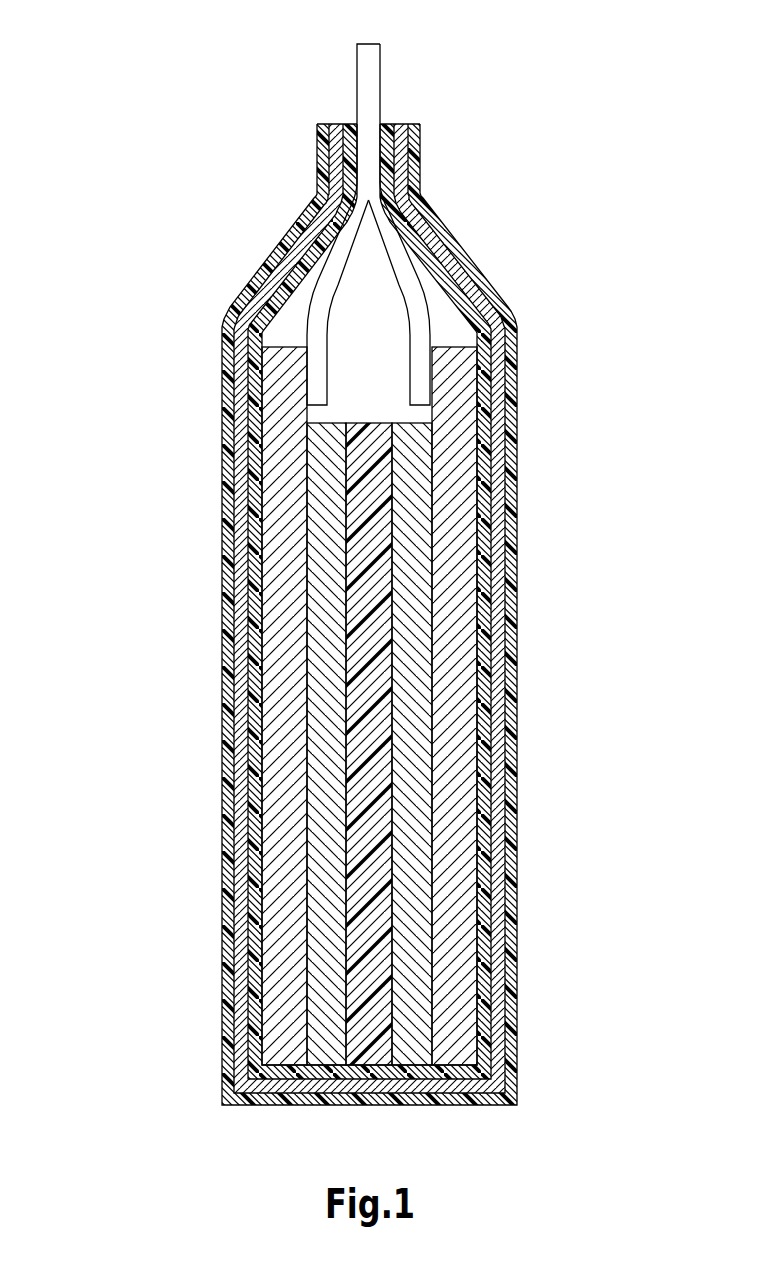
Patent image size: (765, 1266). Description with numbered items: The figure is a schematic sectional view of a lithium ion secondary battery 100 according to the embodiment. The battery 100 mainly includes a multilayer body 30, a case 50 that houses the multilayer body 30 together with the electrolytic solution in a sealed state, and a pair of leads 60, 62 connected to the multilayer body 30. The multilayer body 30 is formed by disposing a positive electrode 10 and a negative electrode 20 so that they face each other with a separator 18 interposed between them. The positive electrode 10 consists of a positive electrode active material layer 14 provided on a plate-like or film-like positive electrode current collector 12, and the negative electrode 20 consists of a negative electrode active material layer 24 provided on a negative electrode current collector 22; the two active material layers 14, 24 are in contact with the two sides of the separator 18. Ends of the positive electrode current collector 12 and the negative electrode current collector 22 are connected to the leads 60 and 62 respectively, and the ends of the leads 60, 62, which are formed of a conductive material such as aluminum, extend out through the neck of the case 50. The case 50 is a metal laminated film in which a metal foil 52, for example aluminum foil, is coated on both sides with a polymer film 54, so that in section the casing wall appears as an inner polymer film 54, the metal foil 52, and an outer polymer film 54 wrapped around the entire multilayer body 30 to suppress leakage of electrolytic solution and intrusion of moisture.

The lithium ion secondary battery 100 is at (580, 77).
The positive electrode 10 is at (155, 523).
The positive electrode current collector 12 is at (440, 530).
The positive electrode active material layer 14 is at (413, 565).
The separator 18 is at (368, 605).
The negative electrode 20 is at (155, 625).
The negative electrode current collector 22 is at (282, 672).
The negative electrode active material layer 24 is at (320, 637).
The multilayer body 30 is at (108, 540).
The case 50 is at (597, 725).
The metal foil 52 is at (497, 765).
The polymer film 54 is at (481, 729).
The lead 60 is at (345, 270).
The lead 62 is at (390, 270).